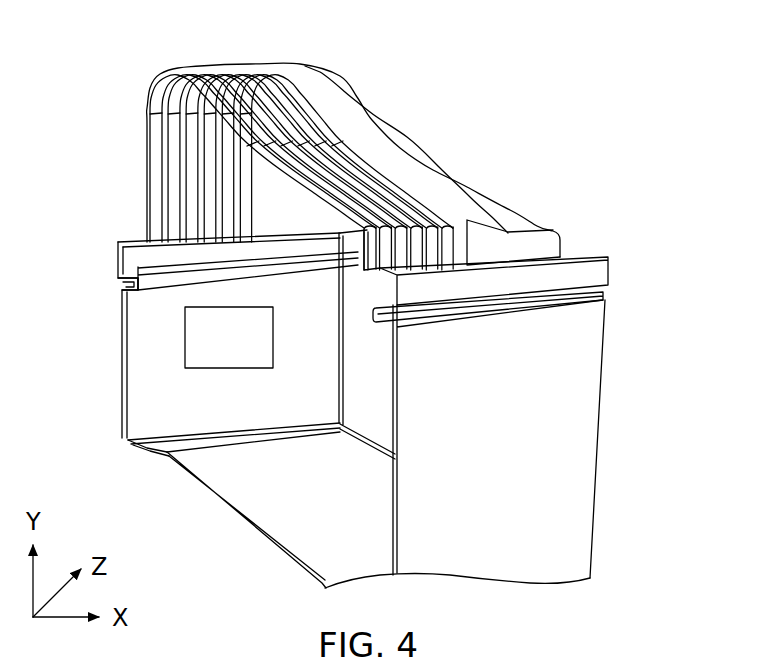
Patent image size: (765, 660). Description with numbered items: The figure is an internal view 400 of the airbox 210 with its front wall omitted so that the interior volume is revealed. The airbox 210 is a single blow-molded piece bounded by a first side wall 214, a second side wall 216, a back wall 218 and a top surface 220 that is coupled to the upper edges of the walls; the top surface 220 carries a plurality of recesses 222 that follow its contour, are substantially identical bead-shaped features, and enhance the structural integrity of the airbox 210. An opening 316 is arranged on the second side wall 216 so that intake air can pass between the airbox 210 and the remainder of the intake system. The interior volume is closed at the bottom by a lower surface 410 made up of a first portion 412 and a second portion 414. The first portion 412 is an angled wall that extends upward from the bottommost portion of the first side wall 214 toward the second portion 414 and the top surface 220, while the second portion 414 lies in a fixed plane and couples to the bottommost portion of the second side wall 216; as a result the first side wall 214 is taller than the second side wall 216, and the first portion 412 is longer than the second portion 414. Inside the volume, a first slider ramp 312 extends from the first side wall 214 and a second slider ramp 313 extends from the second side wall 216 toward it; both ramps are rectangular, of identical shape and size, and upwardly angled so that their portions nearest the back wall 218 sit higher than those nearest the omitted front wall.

The internal view 400 is at (608, 96).
The airbox 210 is at (501, 95).
The plurality of recesses 222 is at (315, 78).
The top surface 220 is at (510, 210).
The second side wall 216 is at (123, 398).
The second slider ramp 313 is at (124, 302).
The opening 316 is at (243, 353).
The back wall 218 is at (377, 390).
The first slider ramp 312 is at (373, 318).
The first side wall 214 is at (583, 423).
The lower surface 410 is at (218, 534).
The second portion 414 is at (148, 455).
The first portion 412 is at (275, 535).